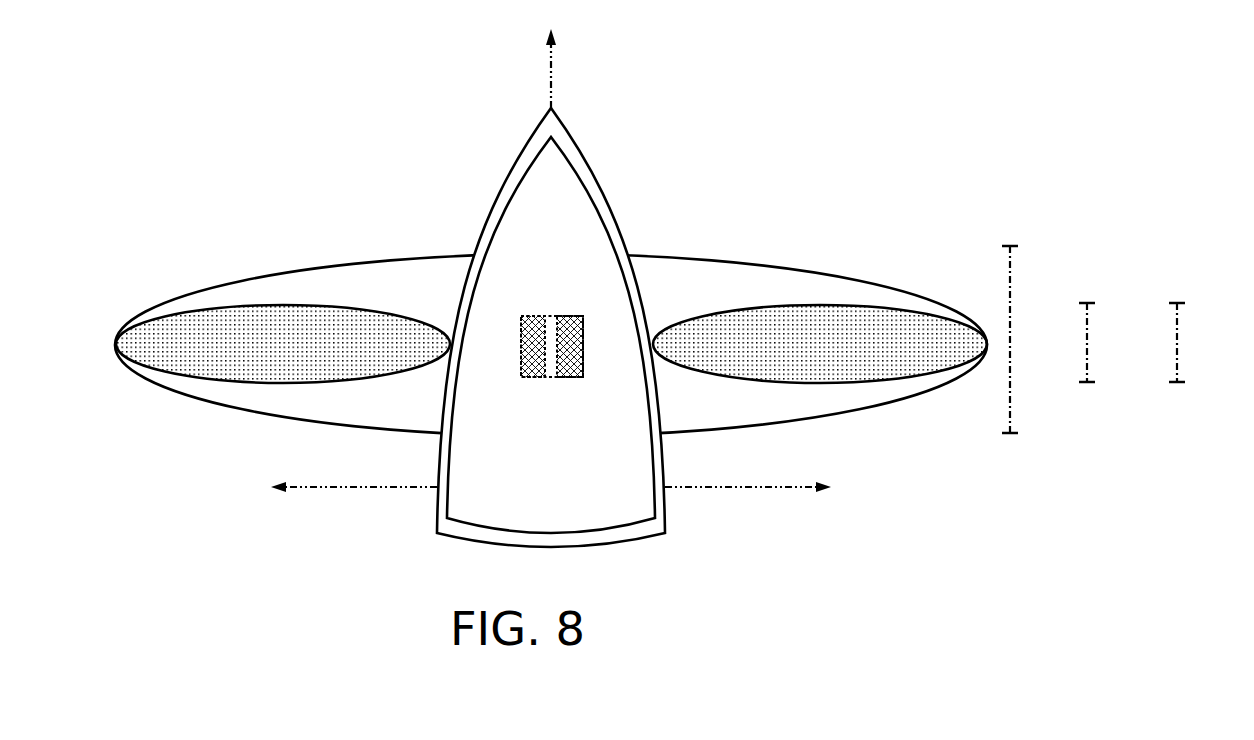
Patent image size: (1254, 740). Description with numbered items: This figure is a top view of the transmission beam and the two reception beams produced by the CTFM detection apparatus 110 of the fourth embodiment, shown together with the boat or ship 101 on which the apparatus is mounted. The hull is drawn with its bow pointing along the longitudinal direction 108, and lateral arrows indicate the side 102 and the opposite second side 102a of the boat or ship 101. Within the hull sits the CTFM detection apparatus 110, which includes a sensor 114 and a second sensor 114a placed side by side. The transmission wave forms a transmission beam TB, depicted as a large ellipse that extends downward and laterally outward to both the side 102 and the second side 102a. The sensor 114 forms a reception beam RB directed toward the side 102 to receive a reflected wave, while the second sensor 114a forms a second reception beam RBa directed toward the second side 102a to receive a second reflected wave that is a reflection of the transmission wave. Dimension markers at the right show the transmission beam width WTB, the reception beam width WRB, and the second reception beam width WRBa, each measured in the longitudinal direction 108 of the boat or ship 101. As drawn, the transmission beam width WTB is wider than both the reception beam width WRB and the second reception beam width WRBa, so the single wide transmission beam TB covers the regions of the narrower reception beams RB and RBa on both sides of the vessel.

The boat or ship 101 is at (505, 183).
The longitudinal direction 108 is at (551, 80).
The side of the boat or ship 102 is at (779, 490).
The second side of the boat or ship 102a is at (322, 490).
The CTFM detection apparatus 110 is at (551, 353).
The sensor 114 is at (571, 369).
The second sensor 114a is at (532, 369).
The transmission beam TB is at (717, 257).
The reception beam RB is at (820, 303).
The second reception beam RBa is at (250, 303).
The transmission beam width WTB is at (1011, 337).
The reception beam width WRB is at (1088, 338).
The second reception beam width WRBa is at (1178, 338).